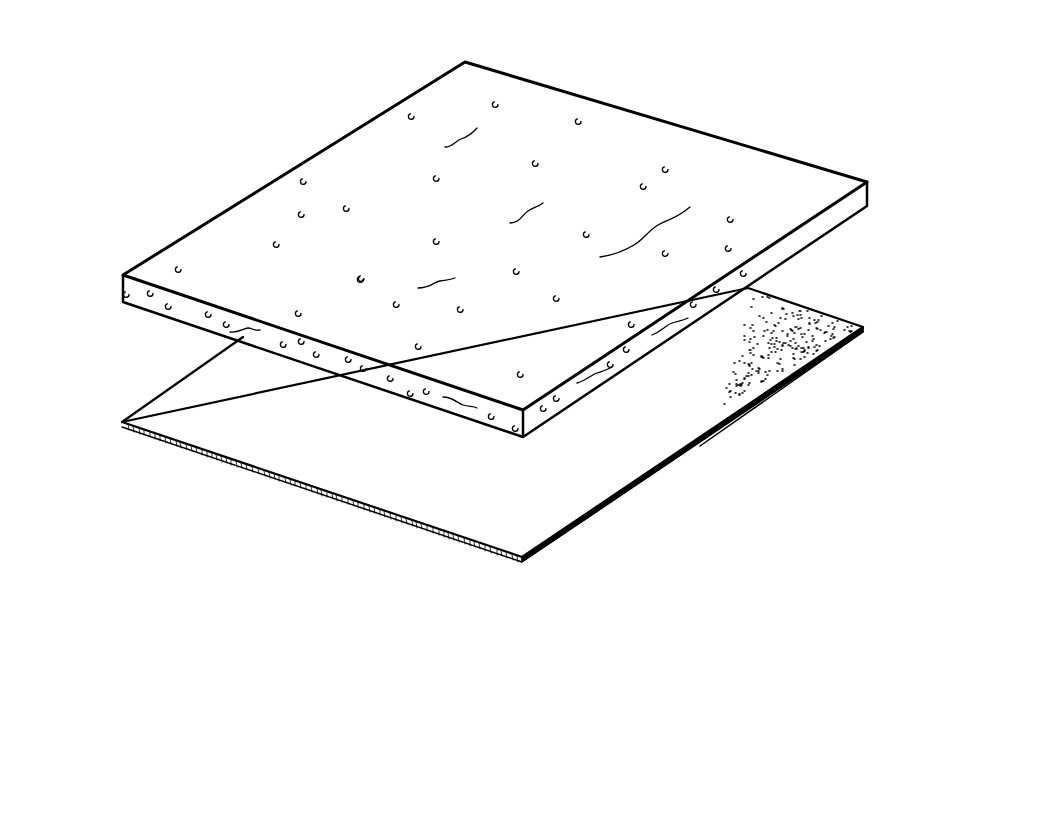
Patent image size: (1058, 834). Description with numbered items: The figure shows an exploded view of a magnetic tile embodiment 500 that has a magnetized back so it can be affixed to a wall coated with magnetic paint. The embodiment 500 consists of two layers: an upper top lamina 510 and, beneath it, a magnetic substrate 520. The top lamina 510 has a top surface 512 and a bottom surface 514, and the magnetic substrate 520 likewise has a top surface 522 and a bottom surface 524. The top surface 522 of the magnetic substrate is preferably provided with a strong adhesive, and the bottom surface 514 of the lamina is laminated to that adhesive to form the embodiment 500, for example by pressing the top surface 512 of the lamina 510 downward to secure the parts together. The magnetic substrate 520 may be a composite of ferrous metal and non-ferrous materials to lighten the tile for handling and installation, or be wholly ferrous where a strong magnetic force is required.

The embodiment 500 is at (742, 108).
The top lamina 510 is at (133, 290).
The top surface of the top lamina 512 is at (757, 168).
The bottom surface of the top lamina 514 is at (861, 208).
The magnetic substrate 520 is at (132, 433).
The top surface of the magnetic substrate 522 is at (818, 315).
The bottom surface of the magnetic substrate 524 is at (826, 370).